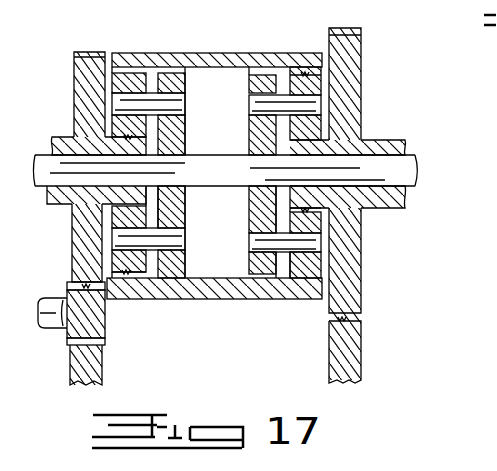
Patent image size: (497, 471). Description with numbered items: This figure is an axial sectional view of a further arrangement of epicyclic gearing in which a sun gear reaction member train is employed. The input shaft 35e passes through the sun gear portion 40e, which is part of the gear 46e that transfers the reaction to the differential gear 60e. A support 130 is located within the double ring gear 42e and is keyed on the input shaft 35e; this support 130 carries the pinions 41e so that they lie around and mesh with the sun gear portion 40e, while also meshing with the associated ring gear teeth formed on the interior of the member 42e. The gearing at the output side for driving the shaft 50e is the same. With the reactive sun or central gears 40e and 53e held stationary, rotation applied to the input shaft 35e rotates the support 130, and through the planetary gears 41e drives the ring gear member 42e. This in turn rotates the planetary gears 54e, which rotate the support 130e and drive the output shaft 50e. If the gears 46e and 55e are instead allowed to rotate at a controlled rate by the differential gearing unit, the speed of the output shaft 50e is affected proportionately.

The input shaft 35e is at (50, 172).
The sun gear portion 40e is at (143, 146).
The pinions 41e is at (132, 78).
The double ring gear 42e is at (192, 53).
The gear 46e is at (88, 72).
The output shaft 50e is at (416, 172).
The reactive sun gear 53e is at (295, 148).
The planetary gears 54e is at (303, 75).
The gear 55e is at (357, 119).
The differential gear 60e is at (92, 372).
The support 130 is at (173, 206).
The support 130e is at (260, 206).